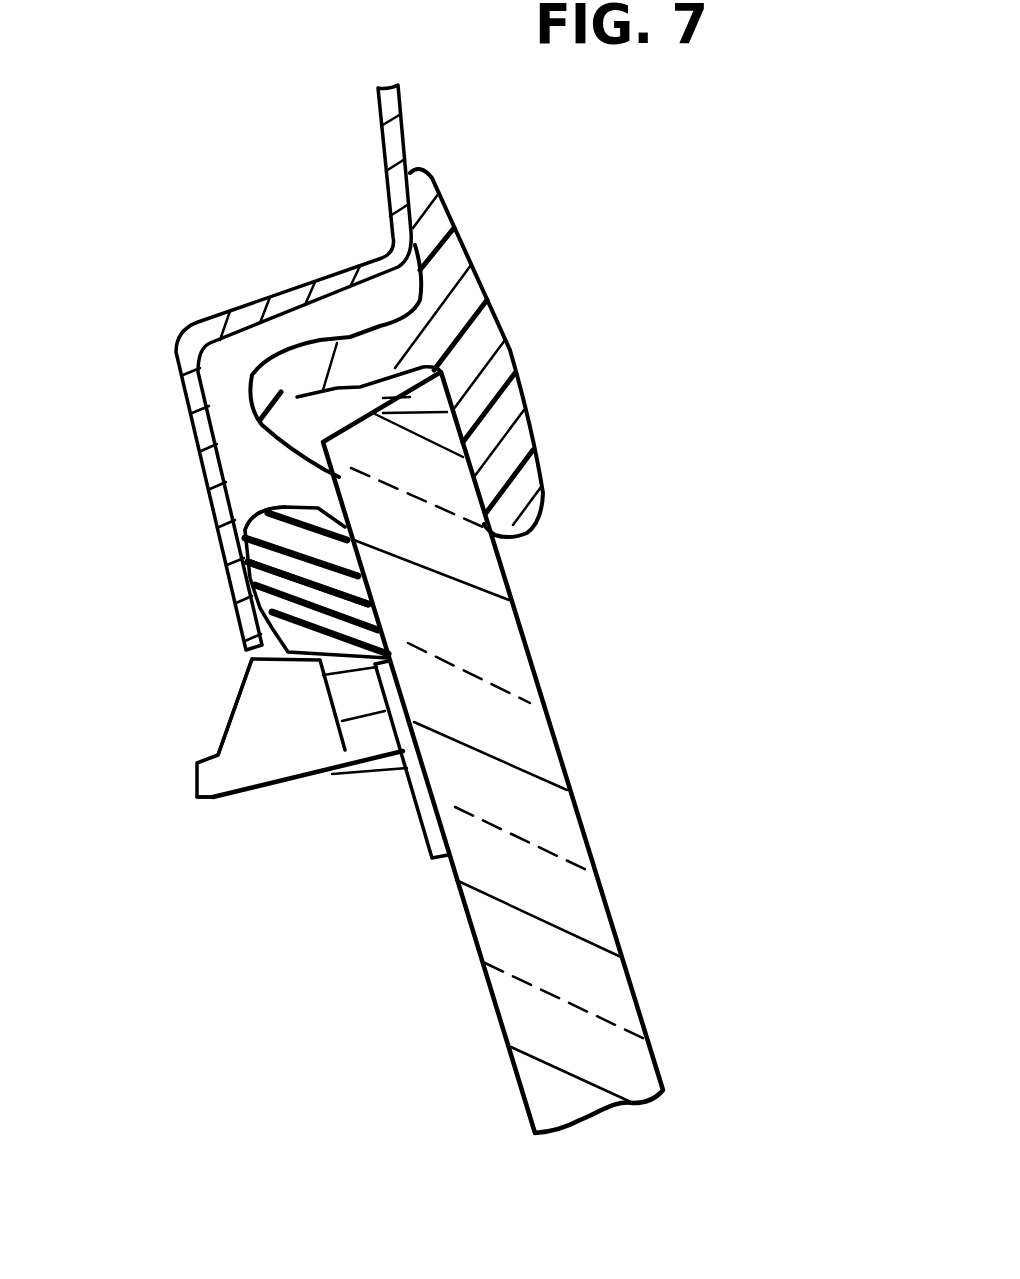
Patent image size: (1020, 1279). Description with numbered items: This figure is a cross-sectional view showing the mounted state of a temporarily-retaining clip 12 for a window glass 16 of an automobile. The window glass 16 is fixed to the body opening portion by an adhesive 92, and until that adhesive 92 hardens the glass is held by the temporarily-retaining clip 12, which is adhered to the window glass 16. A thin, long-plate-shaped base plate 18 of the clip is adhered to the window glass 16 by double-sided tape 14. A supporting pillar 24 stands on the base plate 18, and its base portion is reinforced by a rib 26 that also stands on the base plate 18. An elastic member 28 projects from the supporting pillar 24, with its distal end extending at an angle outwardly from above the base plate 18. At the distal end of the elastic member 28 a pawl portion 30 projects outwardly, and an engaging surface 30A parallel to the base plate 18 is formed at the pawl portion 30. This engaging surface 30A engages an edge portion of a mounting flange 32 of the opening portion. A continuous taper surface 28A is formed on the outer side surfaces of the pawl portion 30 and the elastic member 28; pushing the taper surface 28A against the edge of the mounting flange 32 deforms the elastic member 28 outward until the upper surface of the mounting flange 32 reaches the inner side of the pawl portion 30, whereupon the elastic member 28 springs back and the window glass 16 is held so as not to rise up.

The temporarily-retaining clip 12 is at (210, 810).
The double-sided tape 14 is at (425, 790).
The window glass 16 is at (622, 1006).
The base plate 18 is at (422, 828).
The supporting pillar 24 is at (403, 727).
The rib 26 is at (369, 770).
The elastic member 28 is at (268, 760).
The taper surface 28A is at (237, 712).
The pawl portion 30 is at (248, 665).
The engaging surface 30A is at (256, 598).
The mounting flange 32 is at (262, 612).
The adhesive 92 is at (362, 622).